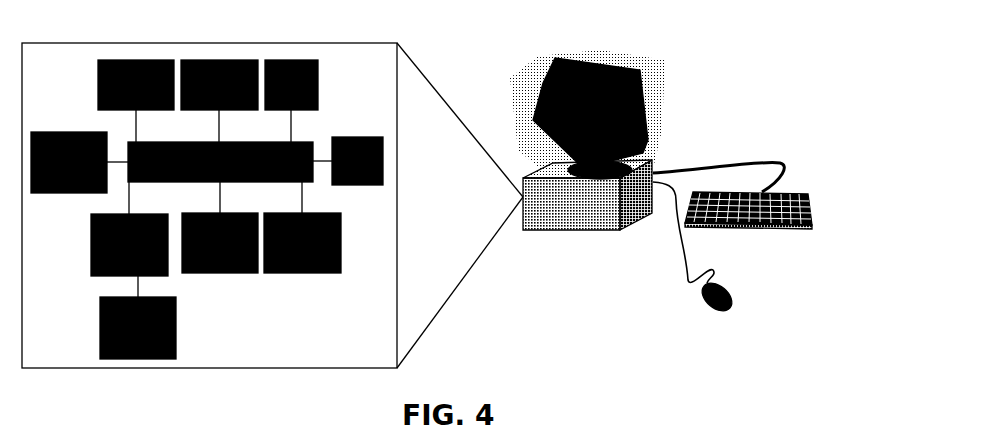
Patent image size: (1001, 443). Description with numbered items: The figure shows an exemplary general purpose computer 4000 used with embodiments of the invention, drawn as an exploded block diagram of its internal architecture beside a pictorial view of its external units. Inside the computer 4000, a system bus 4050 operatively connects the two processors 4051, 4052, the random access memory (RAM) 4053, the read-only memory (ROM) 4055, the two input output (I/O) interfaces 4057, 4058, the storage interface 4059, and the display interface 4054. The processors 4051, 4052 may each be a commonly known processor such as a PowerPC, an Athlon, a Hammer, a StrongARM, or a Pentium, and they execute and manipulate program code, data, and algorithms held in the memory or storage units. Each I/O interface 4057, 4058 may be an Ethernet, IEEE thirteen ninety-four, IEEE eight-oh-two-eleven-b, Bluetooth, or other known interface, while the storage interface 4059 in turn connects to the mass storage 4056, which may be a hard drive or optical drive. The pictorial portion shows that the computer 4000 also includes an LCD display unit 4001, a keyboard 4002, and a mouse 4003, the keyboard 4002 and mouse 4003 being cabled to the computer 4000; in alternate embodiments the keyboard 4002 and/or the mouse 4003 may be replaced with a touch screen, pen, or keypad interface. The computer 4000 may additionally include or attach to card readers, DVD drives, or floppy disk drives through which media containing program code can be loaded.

The computer 4000 is at (587, 215).
The LCD display unit 4001 is at (641, 60).
The keyboard 4002 is at (812, 207).
The mouse 4003 is at (705, 305).
The system bus 4050 is at (220, 162).
The processor 4051 is at (136, 101).
The processor 4052 is at (219, 101).
The random access memory (RAM) 4053 is at (291, 101).
The display interface 4054 is at (79, 162).
The read-only memory (ROM) 4055 is at (348, 161).
The mass storage 4056 is at (138, 317).
The I/O interface 4057 is at (129, 229).
The I/O interface 4058 is at (220, 227).
The storage interface 4059 is at (302, 227).